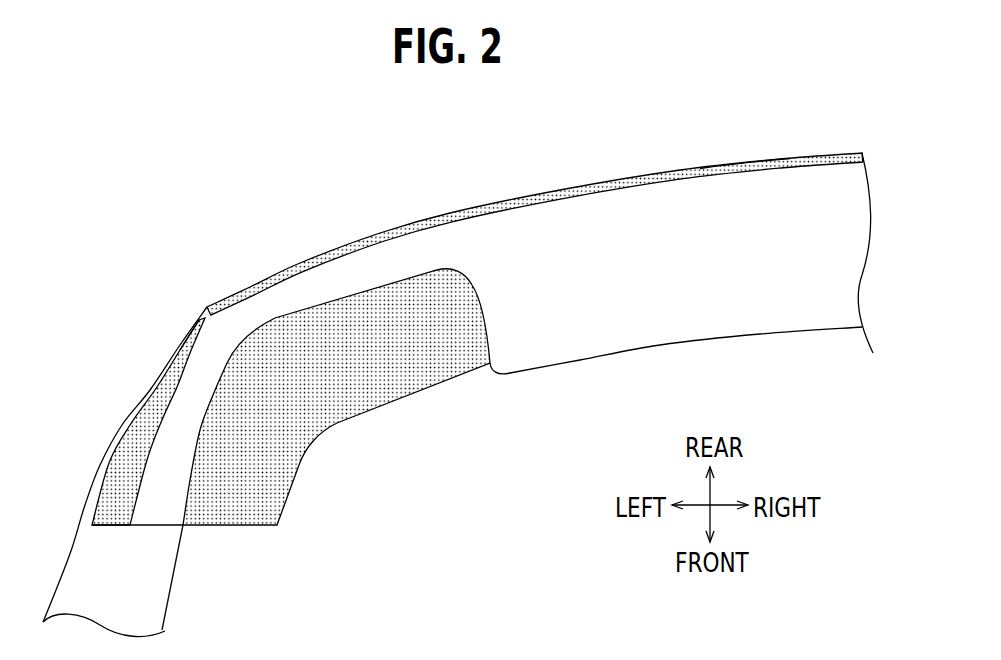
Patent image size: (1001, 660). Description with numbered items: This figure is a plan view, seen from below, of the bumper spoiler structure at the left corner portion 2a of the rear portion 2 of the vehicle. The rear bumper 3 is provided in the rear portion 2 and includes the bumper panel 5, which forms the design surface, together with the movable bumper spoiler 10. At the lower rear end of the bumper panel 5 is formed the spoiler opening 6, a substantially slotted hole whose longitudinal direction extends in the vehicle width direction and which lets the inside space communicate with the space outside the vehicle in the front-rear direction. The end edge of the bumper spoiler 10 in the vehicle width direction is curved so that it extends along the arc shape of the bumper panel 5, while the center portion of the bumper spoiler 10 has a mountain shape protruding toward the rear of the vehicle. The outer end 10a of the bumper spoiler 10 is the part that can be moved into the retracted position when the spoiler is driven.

The rear portion 2 is at (580, 170).
The left corner portion 2a is at (202, 305).
The rear bumper 3 is at (93, 570).
The bumper panel 5 is at (86, 480).
The spoiler opening 6 is at (143, 398).
The bumper spoiler 10 is at (442, 207).
The outer end 10a is at (748, 162).